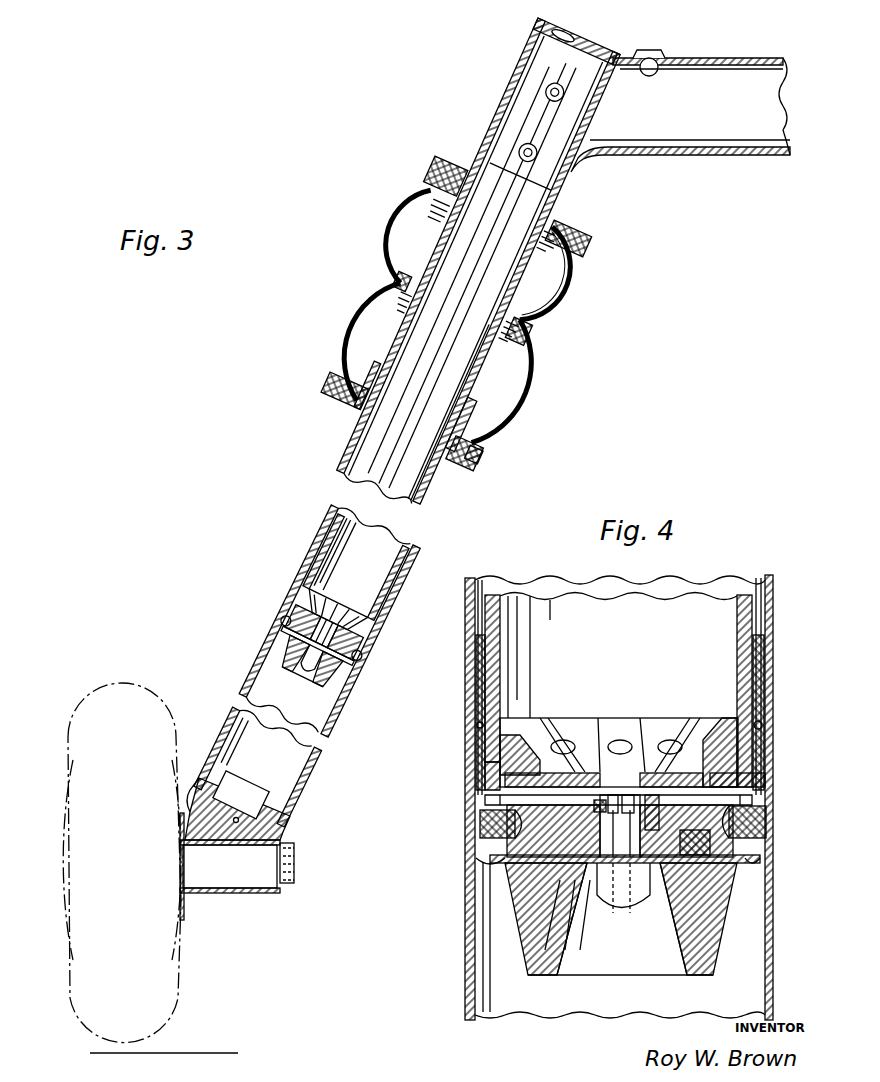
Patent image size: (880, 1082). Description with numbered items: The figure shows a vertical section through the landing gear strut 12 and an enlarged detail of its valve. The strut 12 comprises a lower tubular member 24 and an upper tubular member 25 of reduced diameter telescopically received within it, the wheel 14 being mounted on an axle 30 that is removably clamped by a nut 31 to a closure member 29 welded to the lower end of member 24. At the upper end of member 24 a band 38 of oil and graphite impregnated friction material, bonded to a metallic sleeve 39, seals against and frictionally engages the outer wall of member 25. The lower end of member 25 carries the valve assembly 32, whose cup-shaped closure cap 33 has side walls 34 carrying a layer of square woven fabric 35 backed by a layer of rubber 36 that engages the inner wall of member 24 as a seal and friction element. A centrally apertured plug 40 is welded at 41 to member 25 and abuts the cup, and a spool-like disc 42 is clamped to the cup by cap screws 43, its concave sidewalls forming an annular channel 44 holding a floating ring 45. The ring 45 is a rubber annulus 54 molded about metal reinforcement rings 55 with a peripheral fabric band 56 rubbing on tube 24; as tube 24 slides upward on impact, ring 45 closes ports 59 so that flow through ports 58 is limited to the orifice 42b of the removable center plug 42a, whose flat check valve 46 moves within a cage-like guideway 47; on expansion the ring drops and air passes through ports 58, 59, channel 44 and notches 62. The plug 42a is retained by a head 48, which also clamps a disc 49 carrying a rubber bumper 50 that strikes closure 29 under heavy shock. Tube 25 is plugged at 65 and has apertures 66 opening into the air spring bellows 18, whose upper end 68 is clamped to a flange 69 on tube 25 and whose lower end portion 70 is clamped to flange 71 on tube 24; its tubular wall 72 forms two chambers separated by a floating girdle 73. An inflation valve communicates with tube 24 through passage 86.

In FIG. 3, the tubular strut 12 is at (425, 550).
In FIG. 3, the wheel 14 is at (68, 730).
In FIG. 3, the air spring bellows 18 is at (370, 284).
In FIG. 3, the lower tubular member 24 is at (315, 778).
In FIG. 4, the lower tubular member 24 is at (775, 601).
In FIG. 3, the upper tubular member 25 is at (441, 479).
In FIG. 4, the upper tubular member 25 is at (737, 612).
In FIG. 3, the closure member 29 is at (195, 788).
In FIG. 3, the axle 30 is at (262, 884).
In FIG. 3, the nut 31 is at (298, 862).
In FIG. 3, the valve assembly 32 is at (342, 598).
In FIG. 4, the valve assembly 32 is at (667, 718).
In FIG. 4, the cup-shaped closure cap 33 is at (765, 781).
In FIG. 4, the side walls 34 is at (490, 688).
In FIG. 4, the square woven fabric layer 35 is at (765, 668).
In FIG. 4, the rubber layer 36 is at (762, 725).
In FIG. 3, the friction material band 38 is at (387, 372).
In FIG. 3, the metallic sleeve 39 is at (468, 412).
In FIG. 4, the centrally apertured plug 40 is at (718, 724).
In FIG. 4, the weld 41 is at (773, 745).
In FIG. 4, the disc-like member 42 is at (532, 860).
In FIG. 4, the center plug 42a is at (600, 896).
In FIG. 4, the port 42b is at (633, 800).
In FIG. 4, the cap screws 43 is at (690, 796).
In FIG. 4, the annular channel 44 is at (760, 856).
In FIG. 3, the floating ring 45 is at (358, 656).
In FIG. 4, the floating ring 45 is at (760, 801).
In FIG. 4, the check valve 46 is at (615, 795).
In FIG. 4, the cage-like guideway 47 is at (589, 802).
In FIG. 3, the head 48 is at (306, 696).
In FIG. 4, the head 48 is at (622, 919).
In FIG. 4, the disc 49 is at (510, 870).
In FIG. 3, the rubber bumper 50 is at (272, 645).
In FIG. 4, the rubber bumper 50 is at (718, 956).
In FIG. 4, the rubber annulus 54 is at (773, 818).
In FIG. 4, the metal reinforcement rings 55 is at (482, 825).
In FIG. 4, the graphite impregnated fabric band 56 is at (480, 840).
In FIG. 4, the ports 58 is at (512, 775).
In FIG. 4, the ports 59 is at (484, 778).
In FIG. 4, the notches 62 is at (497, 861).
In FIG. 3, the plug 65 is at (577, 33).
In FIG. 3, the apertures 66 is at (501, 205).
In FIG. 3, the upper end of bellows 68 is at (578, 236).
In FIG. 3, the flange 69 is at (562, 230).
In FIG. 3, the lower end portion of bellows 70 is at (470, 466).
In FIG. 3, the flange 71 is at (488, 462).
In FIG. 3, the tubular wall 72 is at (580, 265).
In FIG. 3, the girdle 73 is at (526, 342).
In FIG. 3, the passage 86 is at (240, 816).